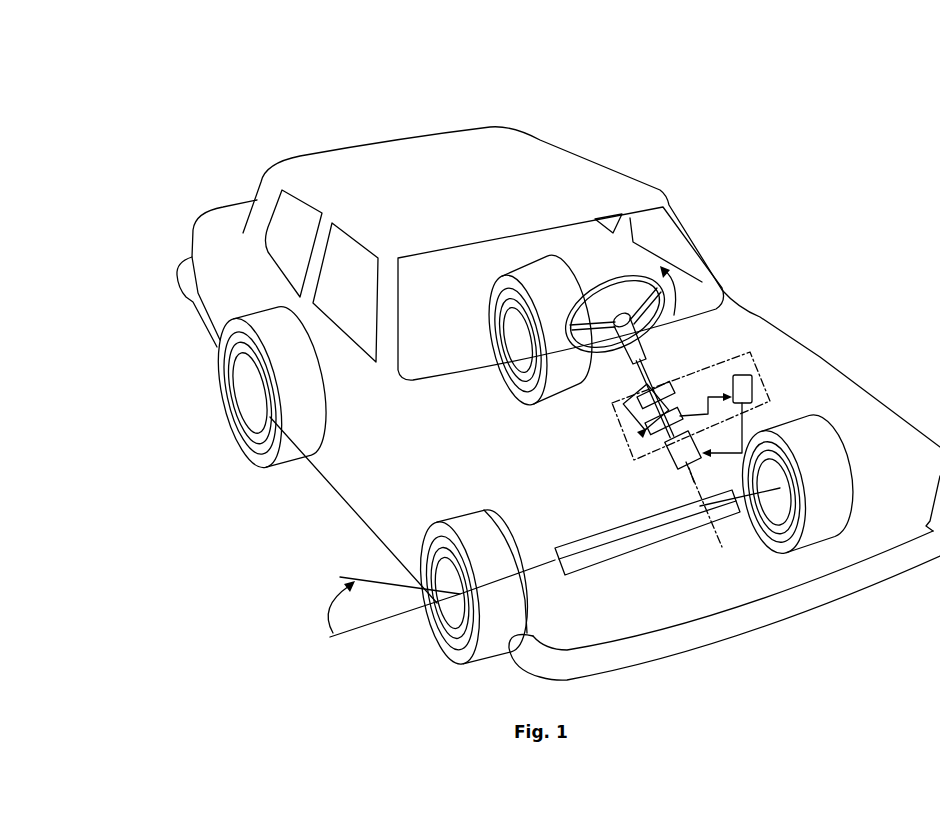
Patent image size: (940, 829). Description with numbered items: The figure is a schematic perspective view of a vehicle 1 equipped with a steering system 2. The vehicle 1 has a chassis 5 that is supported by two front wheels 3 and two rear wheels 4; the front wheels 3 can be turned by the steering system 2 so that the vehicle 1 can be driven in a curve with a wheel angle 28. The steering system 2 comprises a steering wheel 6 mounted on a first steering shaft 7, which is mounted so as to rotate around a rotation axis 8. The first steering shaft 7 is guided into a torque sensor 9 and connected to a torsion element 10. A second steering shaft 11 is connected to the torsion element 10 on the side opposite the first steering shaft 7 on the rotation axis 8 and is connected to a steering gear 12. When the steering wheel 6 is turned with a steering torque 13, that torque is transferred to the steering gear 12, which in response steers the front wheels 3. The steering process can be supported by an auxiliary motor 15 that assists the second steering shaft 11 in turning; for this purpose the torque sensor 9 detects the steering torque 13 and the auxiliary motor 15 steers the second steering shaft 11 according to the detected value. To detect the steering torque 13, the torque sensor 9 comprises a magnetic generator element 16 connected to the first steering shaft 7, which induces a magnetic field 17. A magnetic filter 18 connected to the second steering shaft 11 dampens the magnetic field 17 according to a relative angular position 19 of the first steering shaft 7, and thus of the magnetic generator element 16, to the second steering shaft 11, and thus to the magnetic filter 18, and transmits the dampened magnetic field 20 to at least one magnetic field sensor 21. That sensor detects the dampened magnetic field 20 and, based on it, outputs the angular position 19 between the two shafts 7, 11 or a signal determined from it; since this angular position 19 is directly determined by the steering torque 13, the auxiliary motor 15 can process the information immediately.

The vehicle 1 is at (163, 149).
The steering system 2 is at (534, 481).
The front wheels 3 is at (448, 672).
The rear wheels 4 is at (250, 458).
The chassis 5 is at (487, 126).
The steering wheel 6 is at (616, 281).
The first steering shaft 7 is at (637, 370).
The rotation axis 8 is at (722, 548).
The torque sensor 9 is at (758, 370).
The torsion element 10 is at (674, 402).
The second steering shaft 11 is at (690, 481).
The steering gear 12 is at (592, 545).
The steering torque 13 is at (677, 302).
The auxiliary motor 15 is at (668, 464).
The magnetic generator element 16 is at (660, 383).
The magnetic field 17 is at (622, 428).
The magnetic filter 18 is at (640, 440).
The relative angular position 19 is at (723, 455).
The dampened magnetic field 20 is at (711, 392).
The magnetic field sensor 21 is at (755, 393).
The wheel angle 28 is at (331, 606).